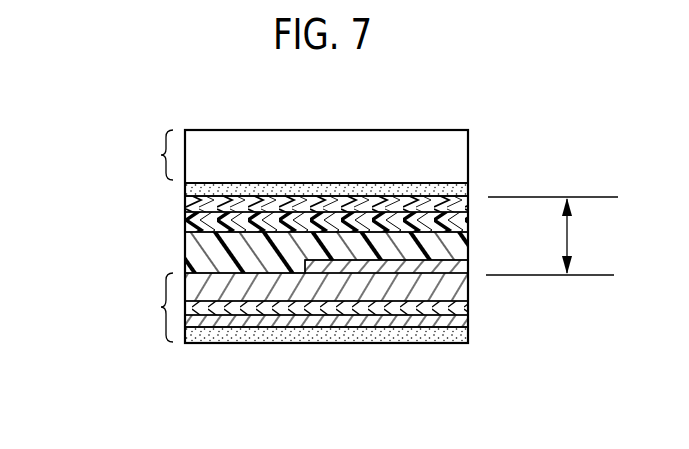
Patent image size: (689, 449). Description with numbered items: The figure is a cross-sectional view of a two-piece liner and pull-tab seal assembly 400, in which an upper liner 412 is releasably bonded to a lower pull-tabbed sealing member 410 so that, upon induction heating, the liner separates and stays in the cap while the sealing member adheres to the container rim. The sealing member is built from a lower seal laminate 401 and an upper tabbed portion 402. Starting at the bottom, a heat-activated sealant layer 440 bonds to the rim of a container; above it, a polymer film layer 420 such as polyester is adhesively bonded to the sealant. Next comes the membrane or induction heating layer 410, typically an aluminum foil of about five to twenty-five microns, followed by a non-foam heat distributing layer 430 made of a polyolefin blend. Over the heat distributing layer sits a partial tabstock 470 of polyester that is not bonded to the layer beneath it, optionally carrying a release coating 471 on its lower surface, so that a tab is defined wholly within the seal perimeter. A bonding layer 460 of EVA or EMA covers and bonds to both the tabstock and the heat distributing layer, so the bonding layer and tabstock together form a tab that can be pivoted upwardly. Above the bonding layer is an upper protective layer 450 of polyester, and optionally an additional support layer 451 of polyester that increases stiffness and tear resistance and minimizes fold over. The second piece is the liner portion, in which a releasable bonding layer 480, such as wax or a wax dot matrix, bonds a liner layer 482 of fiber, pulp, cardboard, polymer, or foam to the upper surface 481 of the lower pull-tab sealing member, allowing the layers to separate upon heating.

The two-piece assembly 400 is at (545, 126).
The lower seal laminate 401 is at (150, 307).
The upper tabbed portion 402 is at (554, 236).
The membrane or induction heating layer 410 is at (455, 322).
The upper liner 412 is at (150, 155).
The polymer film layer 420 is at (462, 340).
The non-foam heat distributing layer 430 is at (452, 306).
The sealant layer 440 is at (241, 333).
The upper protective layer 450 is at (470, 223).
The support layer 451 is at (470, 186).
The bonding layer 460 is at (440, 246).
The tabstock 470 is at (470, 268).
The release coating 471 is at (445, 277).
The releasable bonding layer 480 is at (445, 187).
The upper surface 481 is at (270, 182).
The liner layer 482 is at (372, 157).